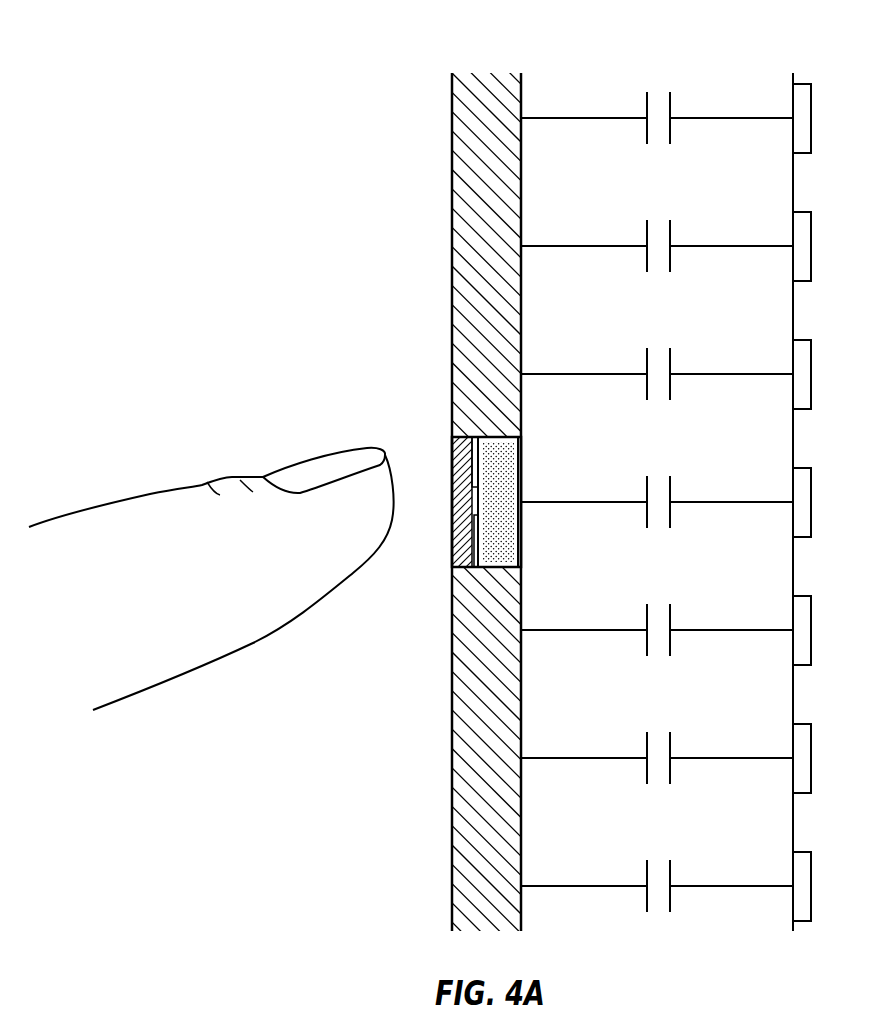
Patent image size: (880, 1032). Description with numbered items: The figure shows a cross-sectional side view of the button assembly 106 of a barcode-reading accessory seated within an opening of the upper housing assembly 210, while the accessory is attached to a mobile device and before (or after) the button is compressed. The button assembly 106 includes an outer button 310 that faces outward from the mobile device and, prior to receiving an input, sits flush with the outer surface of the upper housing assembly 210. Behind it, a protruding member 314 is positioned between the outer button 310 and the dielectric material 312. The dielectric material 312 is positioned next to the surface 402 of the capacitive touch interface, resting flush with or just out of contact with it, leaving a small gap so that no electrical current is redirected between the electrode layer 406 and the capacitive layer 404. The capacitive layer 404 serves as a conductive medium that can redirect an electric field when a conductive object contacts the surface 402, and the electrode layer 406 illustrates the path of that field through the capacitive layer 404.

The button assembly 106 is at (436, 558).
The upper housing assembly 210 is at (432, 80).
The outer button 310 is at (452, 450).
The dielectric material 312 is at (454, 437).
The protruding member 314 is at (477, 568).
The surface 402 is at (530, 455).
The capacitive layer 404 is at (695, 55).
The electrode layer 406 is at (818, 52).